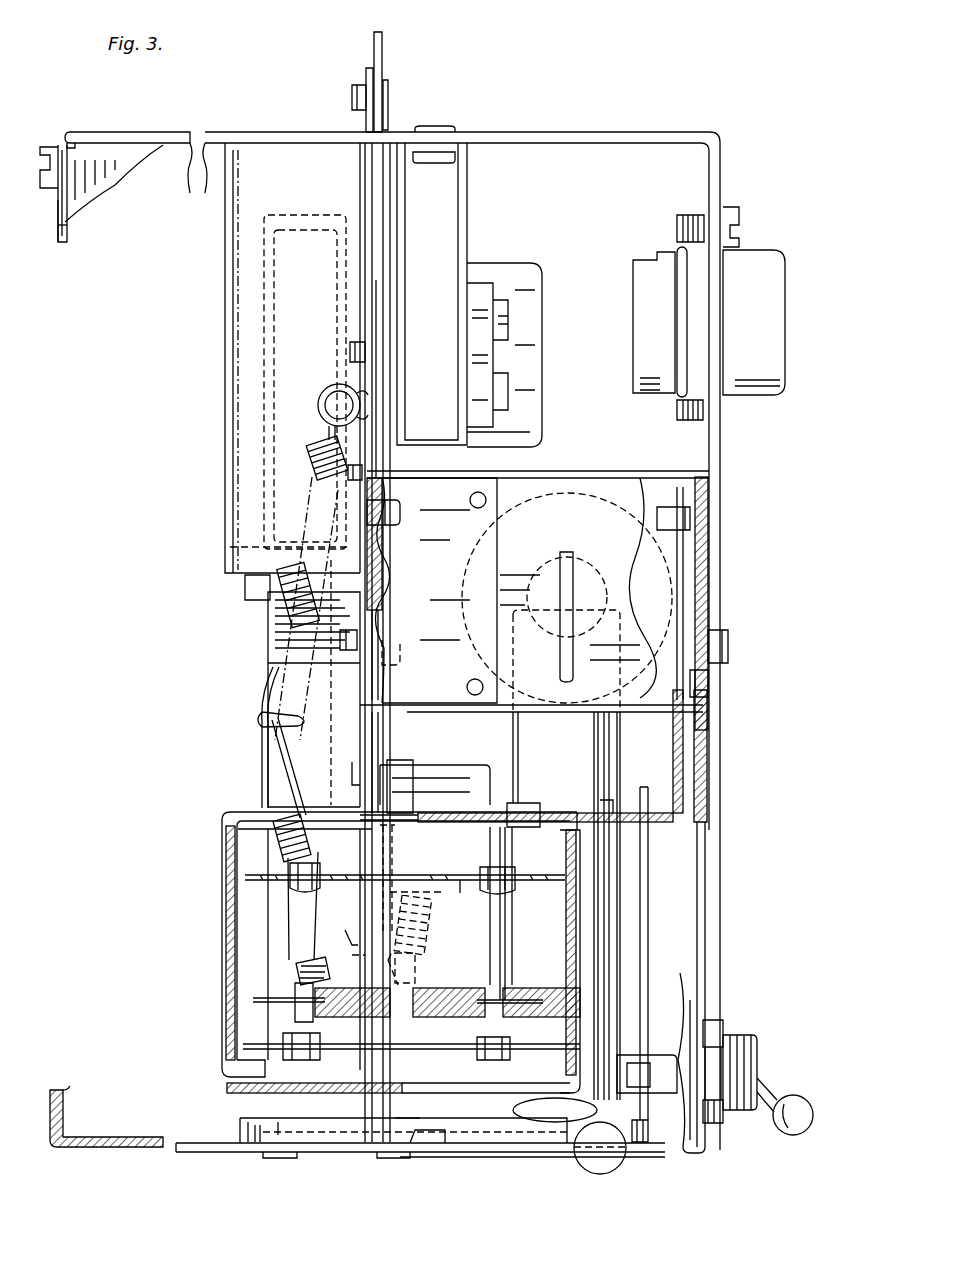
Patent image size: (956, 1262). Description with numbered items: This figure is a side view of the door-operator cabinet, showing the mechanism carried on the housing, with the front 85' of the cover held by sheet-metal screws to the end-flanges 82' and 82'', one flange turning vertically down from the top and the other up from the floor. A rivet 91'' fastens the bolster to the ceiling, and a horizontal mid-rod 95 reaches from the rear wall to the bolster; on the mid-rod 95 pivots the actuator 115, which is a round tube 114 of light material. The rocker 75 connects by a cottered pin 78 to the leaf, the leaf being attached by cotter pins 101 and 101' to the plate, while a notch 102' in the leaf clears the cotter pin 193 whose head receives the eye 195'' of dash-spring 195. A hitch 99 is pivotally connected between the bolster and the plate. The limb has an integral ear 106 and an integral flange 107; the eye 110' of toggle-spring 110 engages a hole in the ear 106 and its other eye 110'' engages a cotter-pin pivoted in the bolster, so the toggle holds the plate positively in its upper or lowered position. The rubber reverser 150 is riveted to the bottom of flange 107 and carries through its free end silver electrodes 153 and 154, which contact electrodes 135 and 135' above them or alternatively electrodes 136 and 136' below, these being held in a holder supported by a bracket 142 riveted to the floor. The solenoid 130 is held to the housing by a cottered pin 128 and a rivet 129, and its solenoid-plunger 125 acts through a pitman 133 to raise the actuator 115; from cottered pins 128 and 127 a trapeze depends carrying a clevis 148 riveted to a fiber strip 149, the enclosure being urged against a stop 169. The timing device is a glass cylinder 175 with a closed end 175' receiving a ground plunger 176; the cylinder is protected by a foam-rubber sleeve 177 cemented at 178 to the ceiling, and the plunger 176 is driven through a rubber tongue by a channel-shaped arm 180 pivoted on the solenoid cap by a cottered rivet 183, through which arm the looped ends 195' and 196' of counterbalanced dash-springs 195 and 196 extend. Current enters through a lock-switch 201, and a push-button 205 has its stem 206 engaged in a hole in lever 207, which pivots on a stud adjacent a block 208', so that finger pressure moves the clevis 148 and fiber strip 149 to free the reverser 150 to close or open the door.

The rocker 75 is at (383, 62).
The cottered pin 78 is at (352, 97).
The end-flange 82' is at (114, 192).
The end-flange 82'' is at (84, 1078).
The front of the cover 85' is at (69, 257).
The rivet 91'' is at (469, 272).
The mid-rod 95 is at (728, 645).
The hitch 99 is at (396, 848).
The cotter pin 101 is at (330, 335).
The cotter pin 101' is at (318, 478).
The notch 102' is at (333, 379).
The ear 106 is at (355, 956).
The flange 107 is at (400, 1020).
The toggle-spring 110 is at (436, 924).
The eye 110' is at (433, 949).
The eye 110'' is at (469, 869).
The round tube 114 is at (615, 893).
The actuator 115 is at (628, 940).
The solenoid-plunger 125 is at (600, 565).
The cottered pin 127 is at (395, 513).
The cottered pin 128 is at (690, 519).
The rivet 129 is at (706, 690).
The solenoid 130 is at (605, 490).
The pitman 133 is at (567, 552).
The electrode 135 is at (402, 892).
The electrode 135' is at (519, 894).
The electrode 136 is at (410, 1021).
The electrode 136' is at (518, 1030).
The bracket 142 is at (500, 1153).
The clevis 148 is at (553, 813).
The fiber strip 149 is at (455, 1122).
The reverser 150 is at (445, 985).
The electrode 153 is at (292, 980).
The electrode 154 is at (505, 976).
The stop 169 is at (398, 665).
The cylinder 175 is at (260, 382).
The closed end 175' is at (253, 386).
The plunger 176 is at (280, 553).
The sleeve 177 is at (238, 358).
The cemented joint 178 is at (281, 132).
The arm 180 is at (262, 695).
The cottered rivet 183 is at (358, 640).
The cotter pin 193 is at (320, 400).
The dash-spring 195 is at (311, 588).
The looped end 195' is at (262, 624).
The eye 195'' is at (307, 424).
The dash-spring 196 is at (284, 890).
The looped end 196' is at (255, 768).
The lock-switch 201 is at (762, 1126).
The push-button 205 is at (606, 1175).
The stem 206 is at (643, 1148).
The lever 207 is at (670, 850).
The block 208' is at (690, 1060).